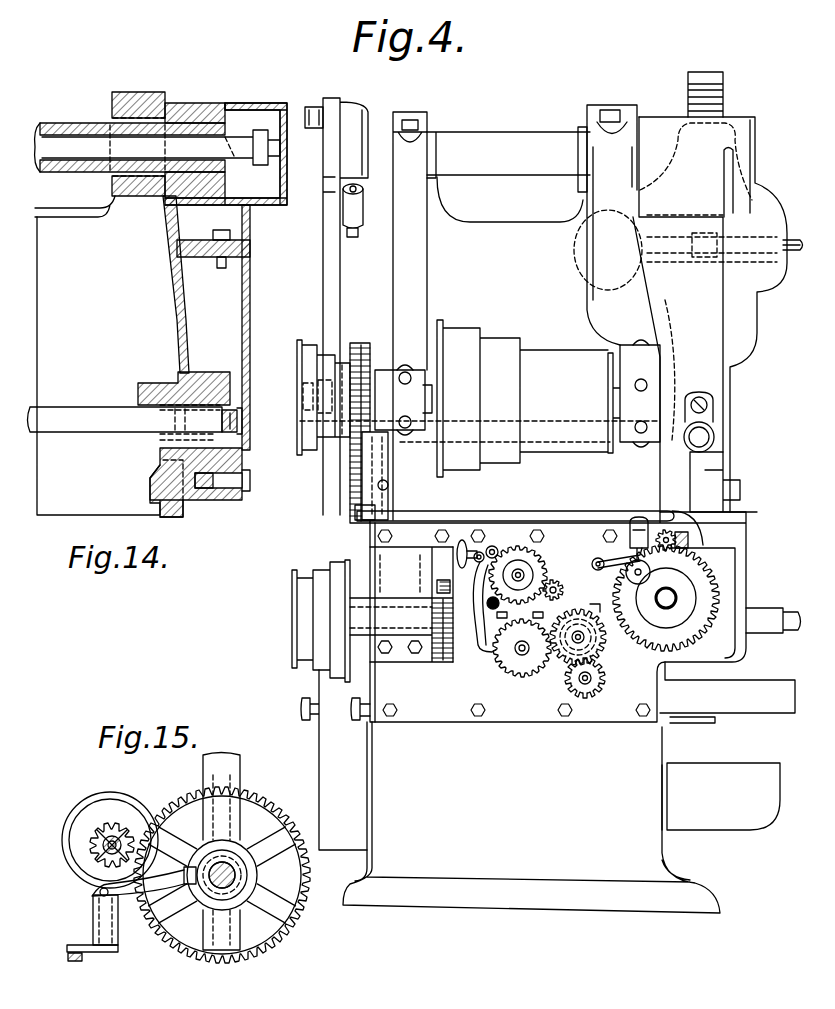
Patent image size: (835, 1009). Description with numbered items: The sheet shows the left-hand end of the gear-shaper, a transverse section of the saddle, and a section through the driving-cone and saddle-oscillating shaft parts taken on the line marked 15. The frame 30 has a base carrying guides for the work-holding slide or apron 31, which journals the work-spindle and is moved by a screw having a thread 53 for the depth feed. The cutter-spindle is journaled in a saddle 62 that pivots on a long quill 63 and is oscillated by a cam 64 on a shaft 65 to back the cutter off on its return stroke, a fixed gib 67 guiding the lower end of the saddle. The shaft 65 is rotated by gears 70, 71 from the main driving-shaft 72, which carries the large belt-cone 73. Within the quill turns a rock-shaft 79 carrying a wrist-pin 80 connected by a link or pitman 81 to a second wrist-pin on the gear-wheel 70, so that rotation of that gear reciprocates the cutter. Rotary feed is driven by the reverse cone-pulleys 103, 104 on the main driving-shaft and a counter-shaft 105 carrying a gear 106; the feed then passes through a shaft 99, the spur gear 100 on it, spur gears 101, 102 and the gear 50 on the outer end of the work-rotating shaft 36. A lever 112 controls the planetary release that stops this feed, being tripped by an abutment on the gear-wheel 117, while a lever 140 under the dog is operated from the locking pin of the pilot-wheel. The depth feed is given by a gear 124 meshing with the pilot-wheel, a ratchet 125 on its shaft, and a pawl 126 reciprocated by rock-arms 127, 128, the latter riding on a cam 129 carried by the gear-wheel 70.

In FIG. 4, the section line 15 is at (362, 347).
In FIG. 14, the frame 30 is at (62, 493).
In FIG. 4, the work-holding slide or apron 31 is at (735, 588).
In FIG. 4, the shaft 36 is at (585, 686).
In FIG. 4, the gear 50 is at (605, 684).
In FIG. 4, the thread 53 is at (672, 603).
In FIG. 14, the saddle 62 is at (238, 103).
In FIG. 4, the saddle 62 is at (700, 335).
In FIG. 14, the quill 63 is at (81, 122).
In FIG. 14, the cam 64 is at (236, 410).
In FIG. 14, the shaft 65 is at (95, 415).
In FIG. 15, the shaft 65 is at (266, 928).
In FIG. 14, the fixed gib 67 is at (246, 470).
In FIG. 4, the fixed gib 67 is at (708, 487).
In FIG. 4, the gear 70 is at (357, 463).
In FIG. 15, the gear 70 is at (262, 805).
In FIG. 4, the gear 71 is at (353, 408).
In FIG. 15, the gear 71 is at (97, 838).
In FIG. 4, the main driving-shaft 72 is at (423, 403).
In FIG. 15, the main driving-shaft 72 is at (108, 820).
In FIG. 4, the belt-cone 73 is at (503, 345).
In FIG. 14, the rock-shaft 79 is at (188, 143).
In FIG. 4, the wrist-pin 80 is at (314, 107).
In FIG. 4, the link or pitman 81 is at (325, 248).
In FIG. 4, the shaft 99 is at (520, 656).
In FIG. 4, the spur gear 100 is at (493, 658).
In FIG. 4, the spur gear 101 is at (571, 614).
In FIG. 4, the spur gear 102 is at (558, 668).
In FIG. 4, the cone-pulley 103 is at (298, 342).
In FIG. 15, the cone-pulley 103 is at (68, 815).
In FIG. 4, the cone-pulley 104 is at (300, 593).
In FIG. 4, the counter-shaft 105 is at (354, 620).
In FIG. 4, the gear 106 is at (437, 664).
In FIG. 4, the lever 112 is at (480, 588).
In FIG. 4, the gear-wheel 117 is at (513, 548).
In FIG. 4, the gear 124 is at (680, 543).
In FIG. 4, the ratchet 125 is at (655, 530).
In FIG. 4, the pawl 126 is at (541, 511).
In FIG. 15, the pawl 126 is at (66, 957).
In FIG. 4, the rock-arm 127 is at (367, 502).
In FIG. 15, the rock-arm 127 is at (97, 948).
In FIG. 4, the rock-arm 128 is at (392, 438).
In FIG. 15, the rock-arm 128 is at (93, 892).
In FIG. 15, the cam 129 is at (197, 900).
In FIG. 4, the lever 140 is at (582, 556).